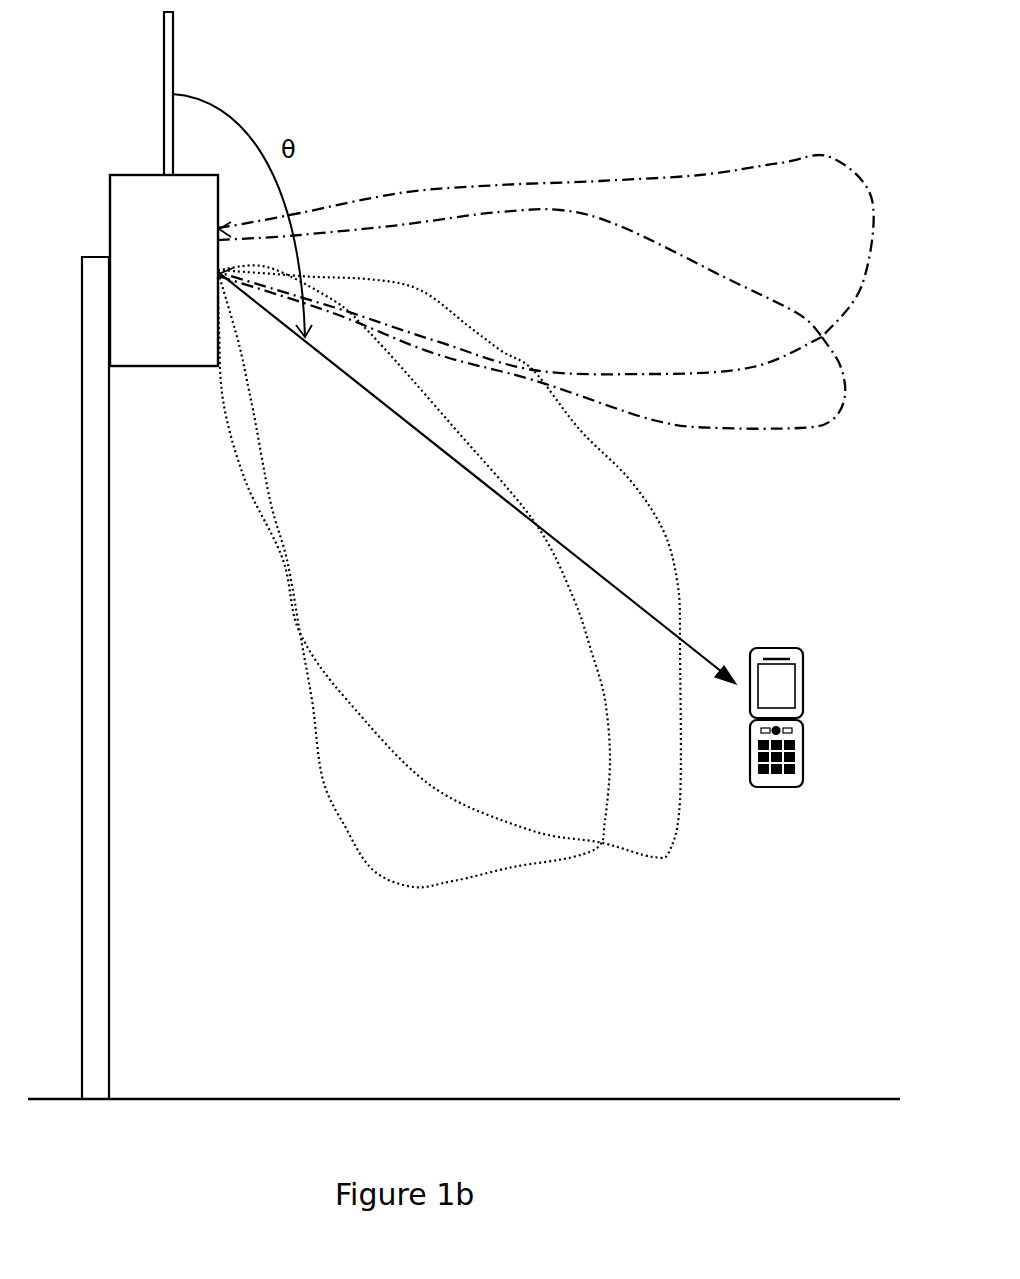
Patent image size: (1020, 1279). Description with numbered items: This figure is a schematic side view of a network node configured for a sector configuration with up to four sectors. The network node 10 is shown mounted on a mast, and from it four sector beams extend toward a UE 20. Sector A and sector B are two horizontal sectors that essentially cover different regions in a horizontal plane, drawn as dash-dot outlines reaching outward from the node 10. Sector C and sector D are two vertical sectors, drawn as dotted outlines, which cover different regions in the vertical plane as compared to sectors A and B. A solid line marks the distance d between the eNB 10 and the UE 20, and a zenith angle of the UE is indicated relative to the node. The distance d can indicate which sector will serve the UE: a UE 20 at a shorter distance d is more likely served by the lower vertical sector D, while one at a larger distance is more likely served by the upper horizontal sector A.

The base station antenna unit 10 is at (151, 202).
The mobile device 20 is at (818, 714).
The sector A is at (546, 246).
The sector B is at (531, 348).
The sector C is at (449, 564).
The sector D is at (414, 576).
The distance between the eNB and the UE d is at (477, 478).